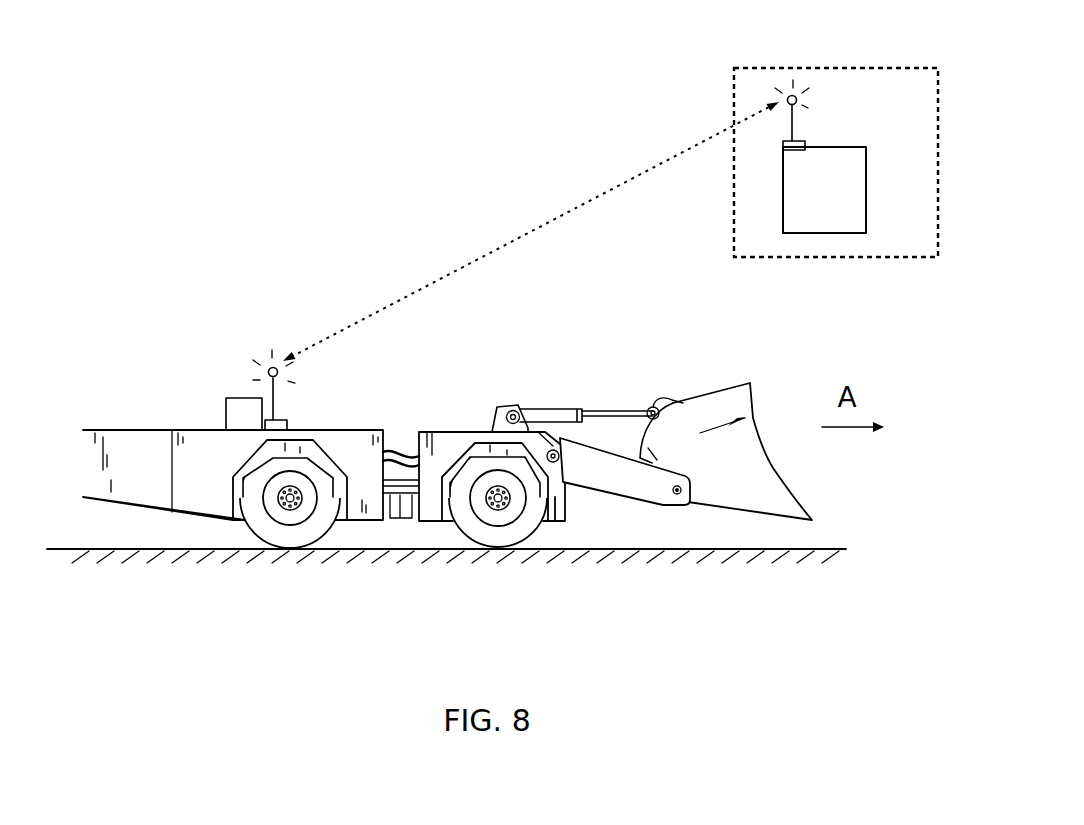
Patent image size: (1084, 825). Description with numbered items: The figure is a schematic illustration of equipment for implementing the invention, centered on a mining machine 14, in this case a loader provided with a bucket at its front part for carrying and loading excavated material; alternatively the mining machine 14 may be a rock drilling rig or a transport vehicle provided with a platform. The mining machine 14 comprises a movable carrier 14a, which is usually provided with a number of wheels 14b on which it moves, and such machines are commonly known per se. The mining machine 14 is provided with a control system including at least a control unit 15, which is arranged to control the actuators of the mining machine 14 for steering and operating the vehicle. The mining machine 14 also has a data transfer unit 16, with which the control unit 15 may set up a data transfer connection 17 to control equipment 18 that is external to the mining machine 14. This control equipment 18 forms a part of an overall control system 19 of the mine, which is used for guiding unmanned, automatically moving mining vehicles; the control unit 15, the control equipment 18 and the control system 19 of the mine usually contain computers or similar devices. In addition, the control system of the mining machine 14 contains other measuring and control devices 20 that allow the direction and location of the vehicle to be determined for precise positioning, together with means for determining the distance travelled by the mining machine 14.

The mining machine 14 is at (447, 498).
The movable carrier 14a is at (443, 438).
The wheels 14b is at (279, 535).
The control unit 15 is at (278, 412).
The data transfer unit 16 is at (242, 407).
The data transfer connection 17 is at (512, 240).
The control equipment 18 is at (806, 207).
The control system of the mine 19 is at (787, 162).
The measuring and control devices 20 is at (233, 423).